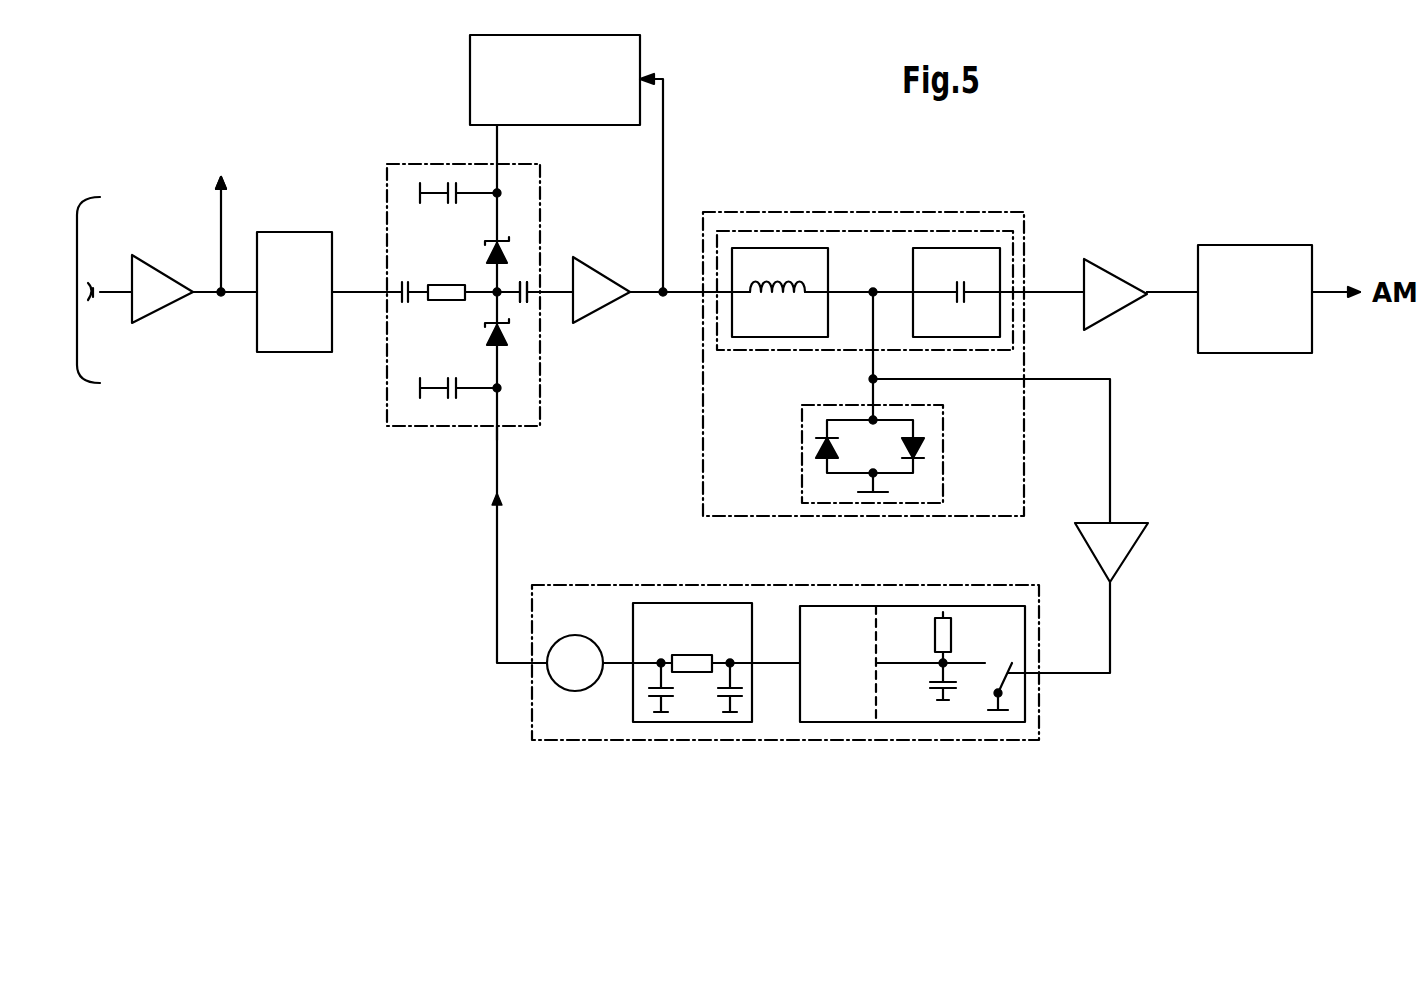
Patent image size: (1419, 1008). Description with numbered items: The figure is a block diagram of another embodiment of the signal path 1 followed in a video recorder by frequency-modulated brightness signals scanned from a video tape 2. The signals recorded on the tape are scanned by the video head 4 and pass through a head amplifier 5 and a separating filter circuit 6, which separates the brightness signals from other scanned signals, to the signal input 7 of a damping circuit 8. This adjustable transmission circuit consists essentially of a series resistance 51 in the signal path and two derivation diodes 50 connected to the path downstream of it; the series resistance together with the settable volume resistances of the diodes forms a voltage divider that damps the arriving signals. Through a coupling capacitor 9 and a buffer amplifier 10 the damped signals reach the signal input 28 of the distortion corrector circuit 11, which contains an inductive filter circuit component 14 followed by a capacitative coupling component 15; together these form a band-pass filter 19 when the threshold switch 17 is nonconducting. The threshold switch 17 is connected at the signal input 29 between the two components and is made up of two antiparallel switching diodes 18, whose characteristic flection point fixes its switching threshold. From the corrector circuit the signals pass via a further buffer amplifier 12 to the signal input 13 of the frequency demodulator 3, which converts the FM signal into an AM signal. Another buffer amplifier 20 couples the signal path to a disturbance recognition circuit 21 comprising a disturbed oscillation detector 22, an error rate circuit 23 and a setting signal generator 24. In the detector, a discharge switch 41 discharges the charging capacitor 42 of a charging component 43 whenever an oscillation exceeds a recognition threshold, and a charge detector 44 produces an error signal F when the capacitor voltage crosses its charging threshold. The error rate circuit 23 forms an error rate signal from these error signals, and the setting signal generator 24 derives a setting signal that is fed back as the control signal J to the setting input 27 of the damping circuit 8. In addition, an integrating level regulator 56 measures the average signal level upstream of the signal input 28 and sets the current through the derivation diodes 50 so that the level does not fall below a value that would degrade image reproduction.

The signal path 1 is at (853, 290).
The video tape 2 is at (77, 197).
The frequency demodulator 3 is at (1256, 245).
The video head 4 is at (92, 283).
The head amplifier 5 is at (160, 312).
The separating filter circuit 6 is at (277, 353).
The signal input of the damping circuit 7 is at (370, 290).
The damping circuit 8 is at (540, 413).
The coupling capacitor 9 is at (543, 292).
The buffer amplifier 10 is at (592, 265).
The distortion corrector circuit 11 is at (712, 428).
The buffer amplifier 12 is at (1098, 270).
The signal input of the frequency demodulator 13 is at (1194, 300).
The inductive filter circuit component 14 is at (770, 248).
The capacitative coupling component 15 is at (978, 255).
The threshold switch 17 is at (815, 480).
The antiparallel switching diodes 18 is at (906, 447).
The band-pass filter 19 is at (895, 250).
The buffer amplifier 20 is at (1135, 548).
The disturbance recognition circuit 21 is at (578, 602).
The disturbed oscillation detector 22 is at (978, 612).
The error rate circuit 23 is at (685, 603).
The setting signal generator 24 is at (578, 690).
The setting input 27 is at (500, 430).
The signal input of the distortion corrector circuit 28 is at (698, 294).
The signal input of the threshold switch 29 is at (873, 379).
The discharge switch 41 is at (1005, 683).
The charging capacitor 42 is at (935, 700).
The charging component 43 is at (934, 645).
The charge detector 44 is at (820, 606).
The derivation diodes 50 is at (487, 250).
The series resistance 51 is at (440, 300).
The integrating level regulator 56 is at (470, 72).
The disturbance recognition control signal J is at (500, 493).
The error signal F is at (778, 663).